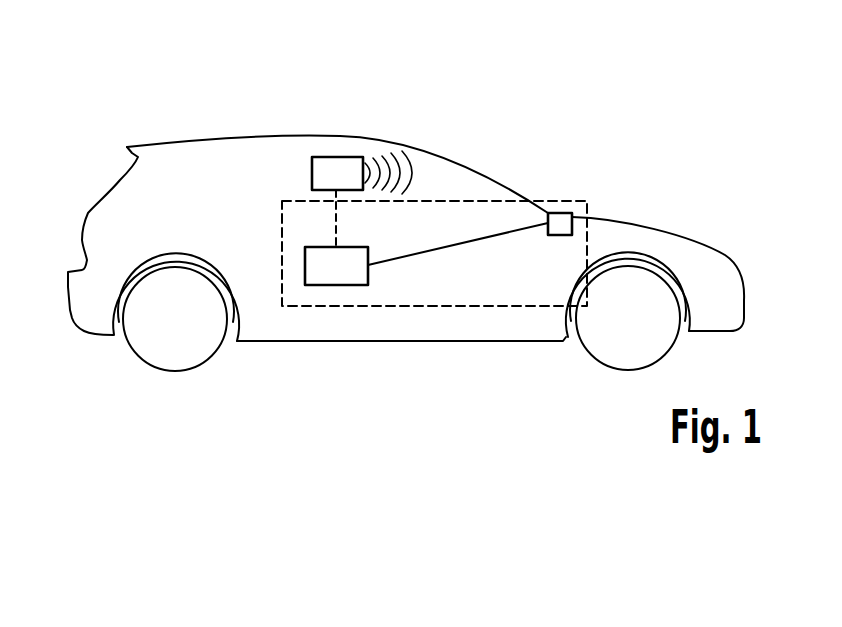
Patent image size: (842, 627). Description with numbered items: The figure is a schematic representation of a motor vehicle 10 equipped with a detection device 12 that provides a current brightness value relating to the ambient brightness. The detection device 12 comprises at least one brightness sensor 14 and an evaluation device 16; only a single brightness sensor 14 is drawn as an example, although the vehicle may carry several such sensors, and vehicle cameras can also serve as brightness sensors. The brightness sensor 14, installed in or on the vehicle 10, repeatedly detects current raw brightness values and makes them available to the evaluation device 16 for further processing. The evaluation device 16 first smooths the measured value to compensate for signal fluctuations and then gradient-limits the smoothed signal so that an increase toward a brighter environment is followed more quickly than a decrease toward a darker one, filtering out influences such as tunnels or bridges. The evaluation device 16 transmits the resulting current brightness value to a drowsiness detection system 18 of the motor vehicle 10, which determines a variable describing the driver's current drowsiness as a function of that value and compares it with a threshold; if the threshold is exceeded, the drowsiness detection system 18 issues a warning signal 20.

The motor vehicle 10 is at (480, 104).
The detection device 12 is at (470, 202).
The brightness sensor 14 is at (560, 222).
The evaluation device 16 is at (335, 267).
The drowsiness detection system 18 is at (335, 170).
The warning signal 20 is at (415, 148).